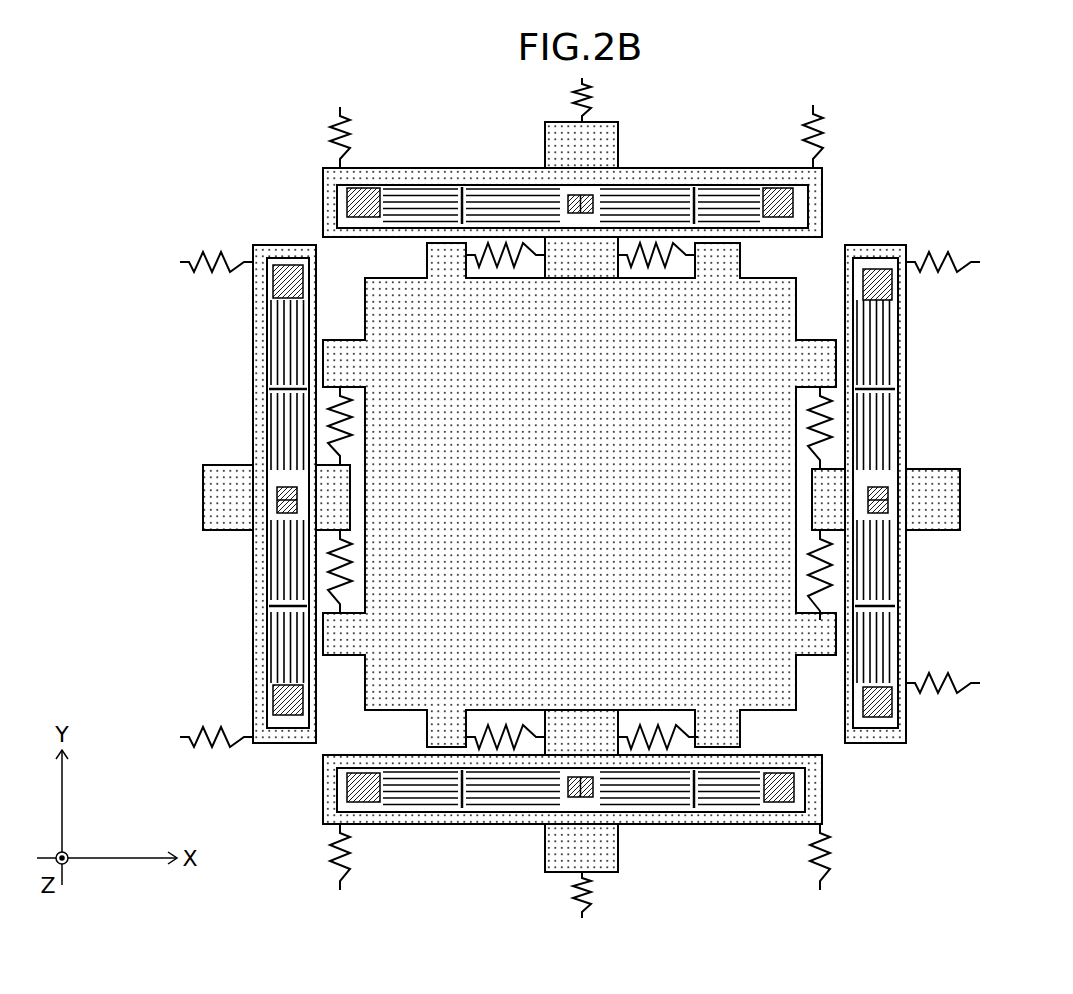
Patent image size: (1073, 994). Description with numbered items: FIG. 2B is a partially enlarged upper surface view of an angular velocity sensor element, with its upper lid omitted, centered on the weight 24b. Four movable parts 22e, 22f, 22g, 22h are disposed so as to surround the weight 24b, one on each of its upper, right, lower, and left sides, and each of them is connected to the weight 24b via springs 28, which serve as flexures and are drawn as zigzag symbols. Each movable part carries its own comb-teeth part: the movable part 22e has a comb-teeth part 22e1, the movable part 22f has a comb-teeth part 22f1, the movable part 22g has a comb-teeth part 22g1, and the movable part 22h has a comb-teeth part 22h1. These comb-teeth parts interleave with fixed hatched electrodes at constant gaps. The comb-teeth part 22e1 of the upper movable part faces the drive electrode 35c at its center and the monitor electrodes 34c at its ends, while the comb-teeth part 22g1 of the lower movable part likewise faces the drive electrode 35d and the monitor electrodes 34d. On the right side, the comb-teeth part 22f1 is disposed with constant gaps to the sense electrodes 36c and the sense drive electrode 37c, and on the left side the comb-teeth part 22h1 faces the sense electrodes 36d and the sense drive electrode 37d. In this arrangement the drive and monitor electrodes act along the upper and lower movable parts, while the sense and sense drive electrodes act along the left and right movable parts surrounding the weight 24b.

The weight 24b is at (437, 668).
The movable part 22e is at (578, 135).
The movable part 22f is at (930, 468).
The movable part 22g is at (480, 820).
The movable part 22h is at (232, 502).
The comb-teeth part 22e1 is at (463, 193).
The comb-teeth part 22f1 is at (877, 393).
The comb-teeth part 22g1 is at (595, 792).
The comb-teeth part 22h1 is at (290, 607).
The springs 28 is at (217, 277).
The monitor electrode 34c is at (355, 198).
The monitor electrode 34d is at (355, 787).
The drive electrode 35c is at (590, 200).
The drive electrode 35d is at (590, 795).
The sense electrode 36c is at (878, 285).
The sense electrode 36d is at (290, 285).
The sense drive electrode 37c is at (880, 520).
The sense drive electrode 37d is at (287, 495).